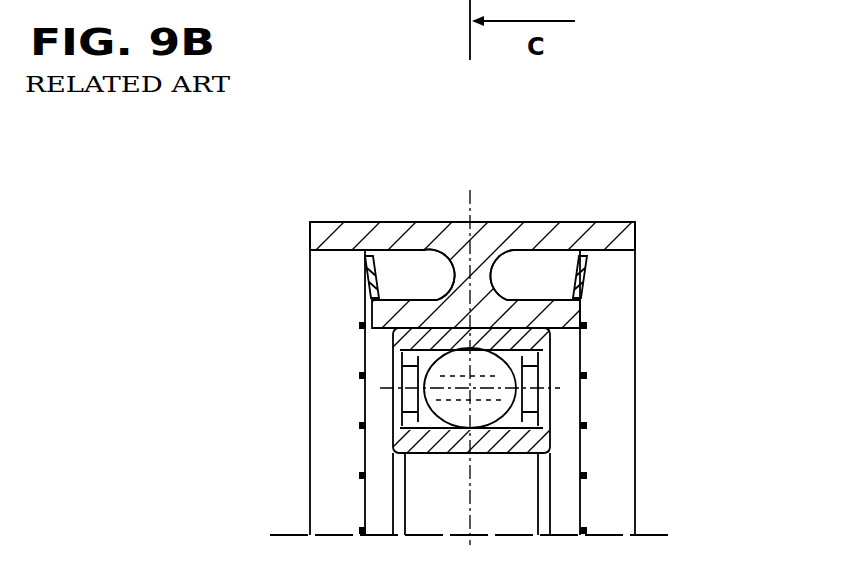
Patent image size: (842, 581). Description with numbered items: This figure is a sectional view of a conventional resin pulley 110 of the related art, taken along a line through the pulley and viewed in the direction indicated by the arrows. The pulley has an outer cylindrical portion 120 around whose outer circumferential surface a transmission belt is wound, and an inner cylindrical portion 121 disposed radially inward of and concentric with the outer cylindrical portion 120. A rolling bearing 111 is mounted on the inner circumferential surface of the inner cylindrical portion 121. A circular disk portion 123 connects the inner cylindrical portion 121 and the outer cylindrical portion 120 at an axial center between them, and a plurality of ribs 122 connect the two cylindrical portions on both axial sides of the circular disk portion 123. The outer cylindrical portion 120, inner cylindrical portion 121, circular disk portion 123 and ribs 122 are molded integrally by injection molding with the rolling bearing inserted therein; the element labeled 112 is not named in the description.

The resin pulley 110 is at (652, 189).
The rolling bearing 111 is at (388, 410).
The housing 112 is at (287, 209).
The outer cylindrical portion 120 is at (375, 236).
The inner cylindrical portion 121 is at (362, 317).
The ribs 122 is at (540, 270).
The circular disk portion 123 is at (428, 250).